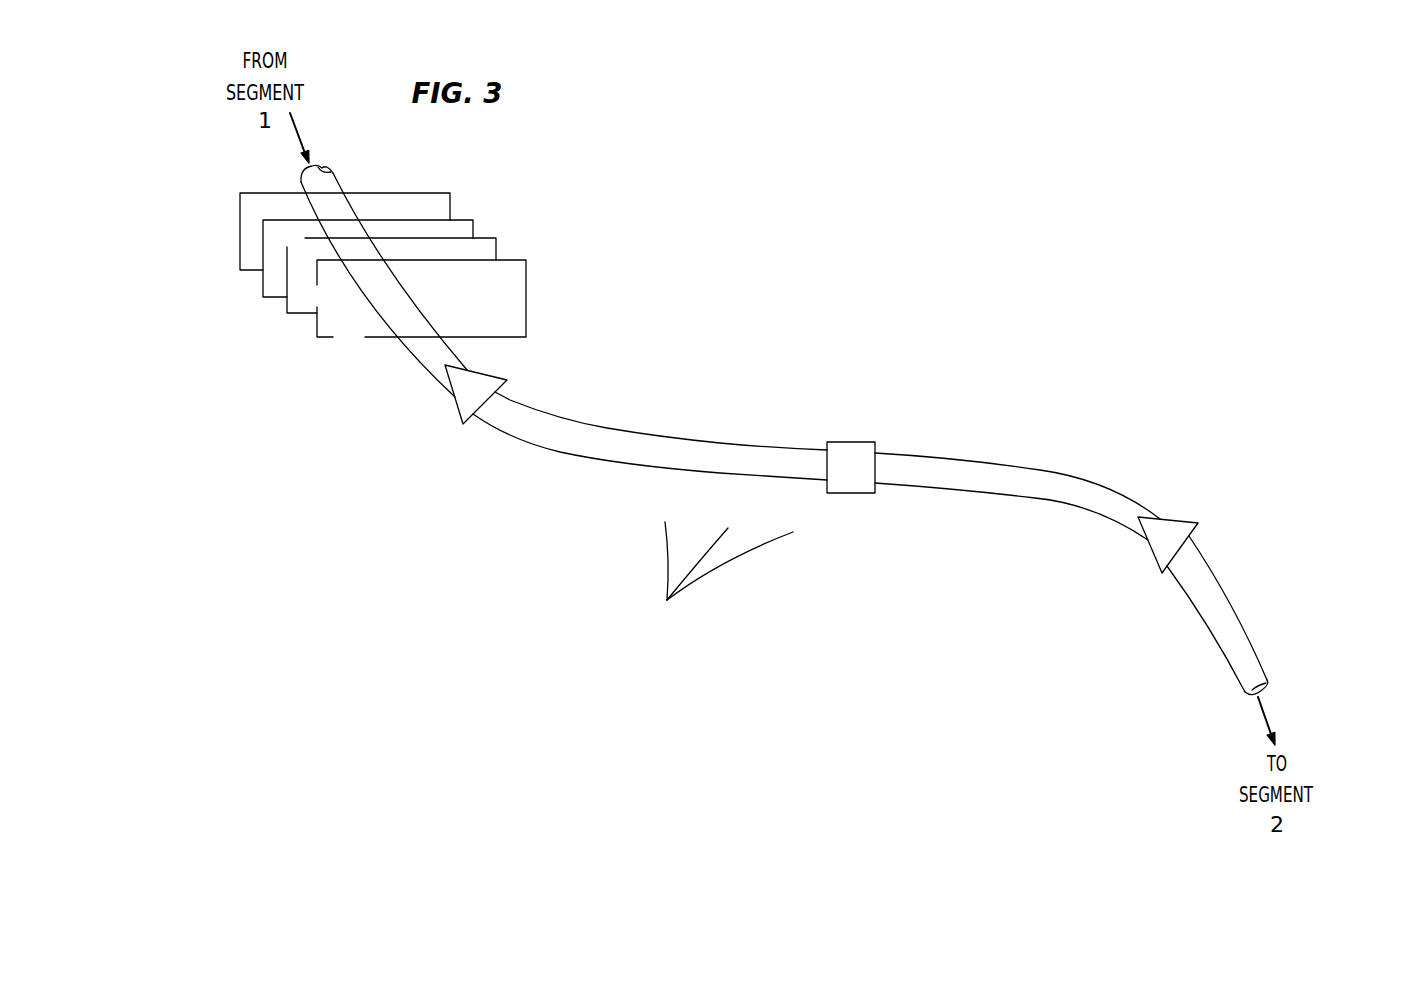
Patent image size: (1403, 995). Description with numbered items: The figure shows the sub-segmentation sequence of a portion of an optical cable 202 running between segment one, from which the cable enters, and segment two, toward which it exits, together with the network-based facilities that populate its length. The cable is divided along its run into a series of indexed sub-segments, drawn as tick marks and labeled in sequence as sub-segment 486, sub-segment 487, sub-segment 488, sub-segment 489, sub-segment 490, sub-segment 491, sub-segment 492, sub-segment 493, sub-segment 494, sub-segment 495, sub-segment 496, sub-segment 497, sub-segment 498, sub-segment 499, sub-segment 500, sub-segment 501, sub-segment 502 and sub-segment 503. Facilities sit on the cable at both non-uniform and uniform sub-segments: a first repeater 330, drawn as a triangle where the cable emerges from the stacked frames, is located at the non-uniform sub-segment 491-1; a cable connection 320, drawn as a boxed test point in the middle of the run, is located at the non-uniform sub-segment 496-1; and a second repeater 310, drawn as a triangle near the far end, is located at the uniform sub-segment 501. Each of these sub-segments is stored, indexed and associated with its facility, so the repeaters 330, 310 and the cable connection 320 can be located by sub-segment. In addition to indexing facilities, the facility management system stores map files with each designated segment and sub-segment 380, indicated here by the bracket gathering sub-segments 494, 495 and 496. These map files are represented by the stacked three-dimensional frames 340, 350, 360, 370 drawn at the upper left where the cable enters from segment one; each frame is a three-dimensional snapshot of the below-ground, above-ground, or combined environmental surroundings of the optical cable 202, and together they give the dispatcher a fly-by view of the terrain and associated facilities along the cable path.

The optical cable 202 is at (1232, 612).
The repeater 310 is at (1187, 520).
The cable connection 320 is at (855, 442).
The repeater 330 is at (505, 380).
The three-dimensional frame 340 is at (526, 303).
The three-dimensional frame 350 is at (496, 253).
The three-dimensional frame 360 is at (473, 227).
The three-dimensional frame 370 is at (450, 198).
The sub-segment 380 is at (716, 578).
The sub-segment 486 is at (317, 212).
The sub-segment 487 is at (343, 267).
The sub-segment 488 is at (367, 303).
The sub-segment 489 is at (402, 340).
The sub-segment 490 is at (435, 383).
The sub-segment 491 is at (480, 417).
The non-uniform sub-segment 491-1 is at (453, 397).
The sub-segment 492 is at (532, 447).
The sub-segment 493 is at (595, 460).
The sub-segment 494 is at (667, 470).
The sub-segment 495 is at (742, 474).
The sub-segment 496 is at (812, 478).
The non-uniform sub-segment 496-1 is at (849, 493).
The sub-segment 497 is at (895, 486).
The sub-segment 498 is at (968, 491).
The sub-segment 499 is at (1035, 498).
The sub-segment 500 is at (1103, 519).
The sub-segment 501 is at (1150, 547).
The sub-segment 502 is at (1197, 600).
The sub-segment 503 is at (1227, 662).